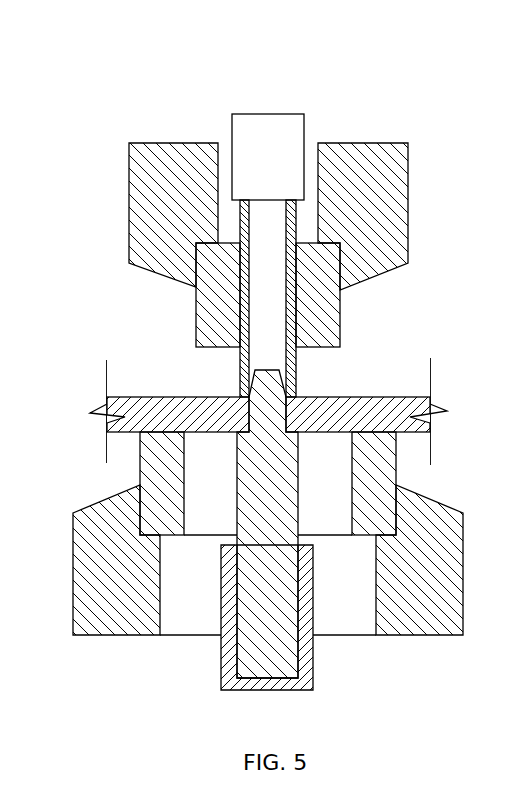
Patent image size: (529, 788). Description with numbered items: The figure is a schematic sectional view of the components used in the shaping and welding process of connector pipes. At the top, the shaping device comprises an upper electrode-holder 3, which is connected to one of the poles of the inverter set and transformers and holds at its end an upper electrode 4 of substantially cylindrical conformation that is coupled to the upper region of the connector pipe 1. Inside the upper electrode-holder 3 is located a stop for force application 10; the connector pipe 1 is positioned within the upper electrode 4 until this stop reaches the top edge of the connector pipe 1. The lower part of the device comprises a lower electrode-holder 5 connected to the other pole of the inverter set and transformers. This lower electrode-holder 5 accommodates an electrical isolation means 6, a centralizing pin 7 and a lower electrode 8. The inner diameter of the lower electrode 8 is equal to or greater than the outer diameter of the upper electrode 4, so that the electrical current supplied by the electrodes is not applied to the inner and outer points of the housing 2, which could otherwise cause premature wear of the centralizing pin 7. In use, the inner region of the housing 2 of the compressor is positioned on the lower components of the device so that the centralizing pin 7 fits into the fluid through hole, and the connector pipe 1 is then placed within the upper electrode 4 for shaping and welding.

The connector pipe 1 is at (272, 355).
The housing 2 is at (195, 397).
The upper electrode-holder 3 is at (366, 162).
The upper electrode 4 is at (318, 295).
The lower electrode-holder 5 is at (88, 543).
The electrical isolation means 6 is at (225, 643).
The centralizing pin 7 is at (263, 635).
The lower electrode 8 is at (157, 463).
The stop for force application 10 is at (261, 134).